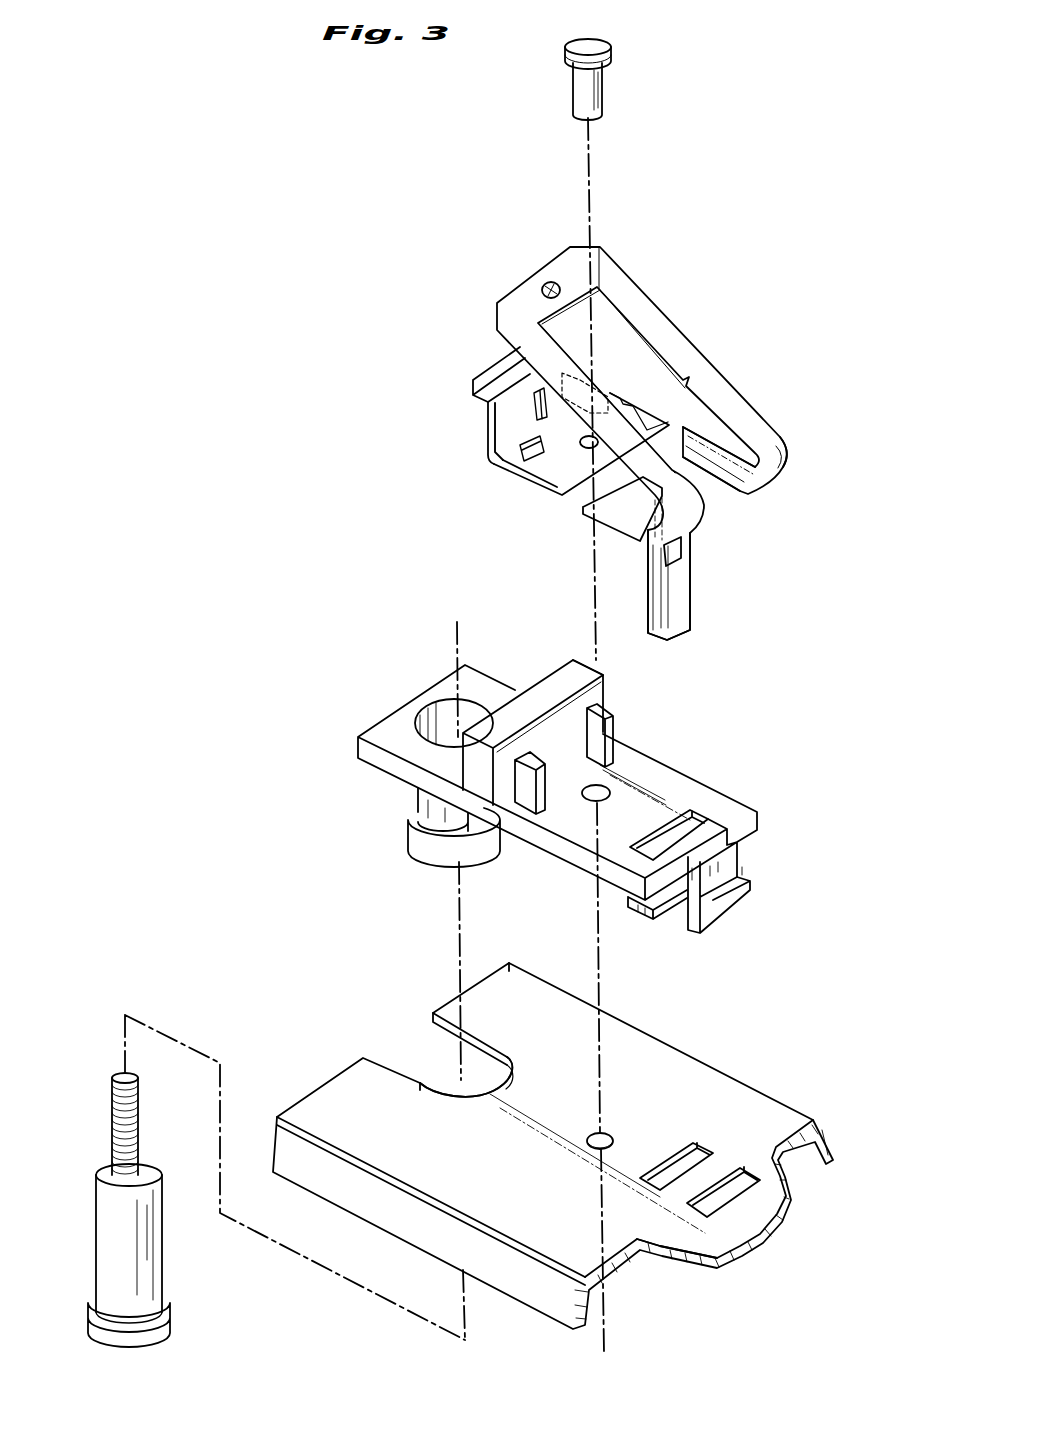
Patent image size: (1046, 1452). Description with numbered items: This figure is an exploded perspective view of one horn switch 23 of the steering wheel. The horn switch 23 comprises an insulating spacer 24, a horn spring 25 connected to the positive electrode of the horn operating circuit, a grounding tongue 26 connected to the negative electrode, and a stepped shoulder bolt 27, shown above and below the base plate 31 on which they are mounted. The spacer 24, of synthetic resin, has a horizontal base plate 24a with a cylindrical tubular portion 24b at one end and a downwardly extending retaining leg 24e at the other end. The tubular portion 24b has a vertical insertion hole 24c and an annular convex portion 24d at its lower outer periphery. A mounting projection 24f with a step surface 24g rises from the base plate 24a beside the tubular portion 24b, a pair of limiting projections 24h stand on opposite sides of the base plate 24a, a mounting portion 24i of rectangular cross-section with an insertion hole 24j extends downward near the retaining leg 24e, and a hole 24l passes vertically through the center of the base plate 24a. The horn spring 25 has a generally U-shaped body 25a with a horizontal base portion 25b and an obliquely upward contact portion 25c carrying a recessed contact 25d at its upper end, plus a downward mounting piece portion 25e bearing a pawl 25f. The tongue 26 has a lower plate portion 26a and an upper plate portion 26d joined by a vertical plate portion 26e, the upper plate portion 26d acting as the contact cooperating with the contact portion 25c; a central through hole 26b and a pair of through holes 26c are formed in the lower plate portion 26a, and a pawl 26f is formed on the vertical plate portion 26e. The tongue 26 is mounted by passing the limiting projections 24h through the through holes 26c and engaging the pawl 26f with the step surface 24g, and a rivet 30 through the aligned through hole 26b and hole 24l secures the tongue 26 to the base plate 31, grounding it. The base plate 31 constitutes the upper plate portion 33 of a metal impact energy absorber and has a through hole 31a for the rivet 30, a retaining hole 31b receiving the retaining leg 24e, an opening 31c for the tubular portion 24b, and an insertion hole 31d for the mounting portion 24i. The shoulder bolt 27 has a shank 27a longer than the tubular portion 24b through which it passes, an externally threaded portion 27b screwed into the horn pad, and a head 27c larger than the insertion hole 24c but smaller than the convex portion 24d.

The horn switch 23 is at (318, 290).
The spacer 24 is at (775, 752).
The base plate 24a is at (630, 754).
The cylindrical tubular portion 24b is at (416, 800).
The insertion hole 24c is at (440, 704).
The annular convex portion 24d is at (432, 853).
The retaining leg 24e is at (750, 879).
The mounting projection 24f is at (575, 676).
The step surface 24g is at (548, 735).
The limiting projections 24h is at (614, 718).
The mounting portion 24i is at (666, 905).
The insertion hole 24j is at (714, 810).
The hole 24l is at (612, 790).
The horn spring 25 is at (778, 528).
The body 25a is at (840, 425).
The base portion 25b is at (748, 494).
The contact portion 25c is at (762, 448).
The contact 25d is at (551, 282).
The mounting piece portion 25e is at (685, 608).
The pawl 25f is at (688, 553).
The tongue 26 is at (462, 432).
The lower plate portion 26a is at (548, 478).
The through hole 26b is at (563, 490).
The through holes 26c is at (605, 392).
The upper plate portion 26d is at (477, 378).
The vertical plate portion 26e is at (520, 448).
The pawl 26f is at (535, 405).
The shoulder bolt 27 is at (78, 1174).
The shank 27a is at (150, 1260).
The externally-threaded portion 27b is at (136, 1113).
The head 27c is at (168, 1324).
The rivet 30 is at (640, 62).
The base plate 31 is at (780, 1078).
The upper plate portion 33 is at (553, 1146).
The through hole 31a is at (614, 1137).
The retaining hole 31b is at (745, 1195).
The opening 31c is at (430, 1075).
The insertion hole 31d is at (660, 1243).